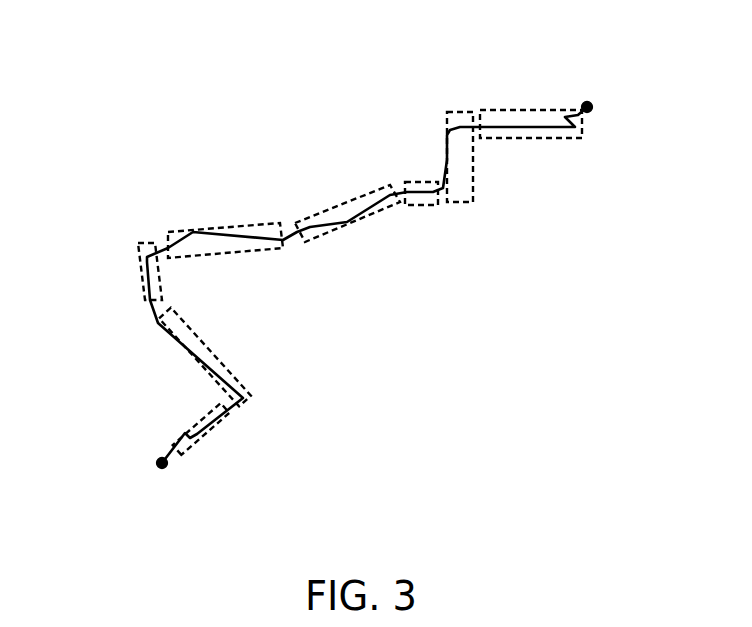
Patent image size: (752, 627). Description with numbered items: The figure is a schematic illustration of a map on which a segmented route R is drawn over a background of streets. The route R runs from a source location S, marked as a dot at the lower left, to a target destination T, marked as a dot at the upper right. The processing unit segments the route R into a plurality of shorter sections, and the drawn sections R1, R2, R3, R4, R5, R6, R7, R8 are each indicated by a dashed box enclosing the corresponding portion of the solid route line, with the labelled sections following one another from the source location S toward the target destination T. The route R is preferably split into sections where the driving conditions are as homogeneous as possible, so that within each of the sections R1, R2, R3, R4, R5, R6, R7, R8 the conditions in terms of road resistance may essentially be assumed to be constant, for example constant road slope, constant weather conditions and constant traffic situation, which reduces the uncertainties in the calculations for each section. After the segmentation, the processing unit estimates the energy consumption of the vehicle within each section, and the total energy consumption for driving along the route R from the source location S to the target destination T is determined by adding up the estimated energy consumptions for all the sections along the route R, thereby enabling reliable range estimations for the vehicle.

The source location S is at (162, 463).
The target destination T is at (587, 107).
The route R is at (290, 242).
The route section R1 is at (182, 433).
The route section R2 is at (242, 388).
The route section R3 is at (138, 243).
The route section R4 is at (217, 228).
The route section R5 is at (327, 210).
The route section R6 is at (413, 182).
The route section R7 is at (458, 112).
The route section R8 is at (517, 110).